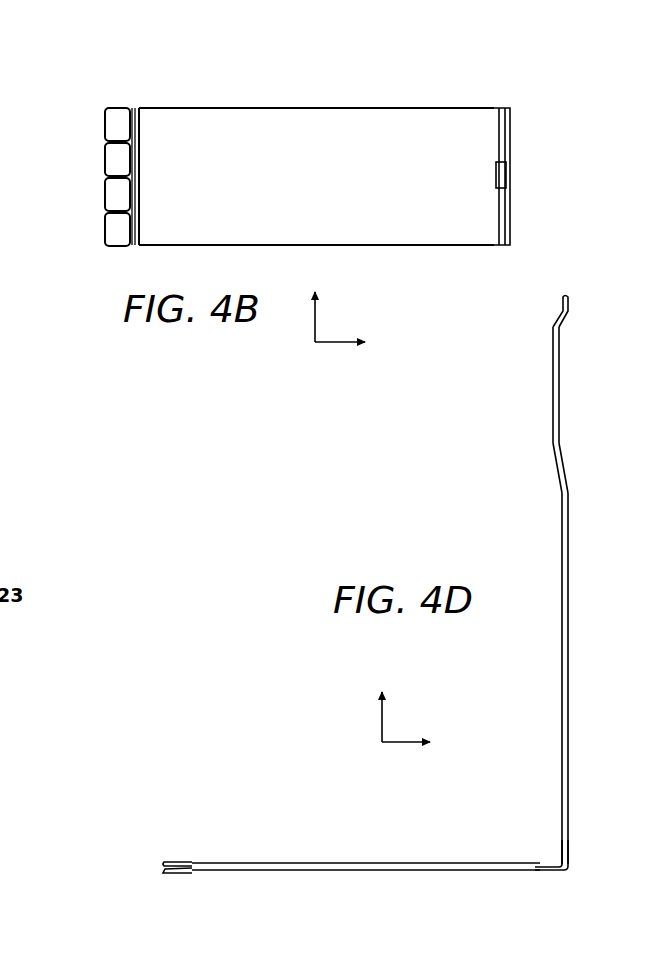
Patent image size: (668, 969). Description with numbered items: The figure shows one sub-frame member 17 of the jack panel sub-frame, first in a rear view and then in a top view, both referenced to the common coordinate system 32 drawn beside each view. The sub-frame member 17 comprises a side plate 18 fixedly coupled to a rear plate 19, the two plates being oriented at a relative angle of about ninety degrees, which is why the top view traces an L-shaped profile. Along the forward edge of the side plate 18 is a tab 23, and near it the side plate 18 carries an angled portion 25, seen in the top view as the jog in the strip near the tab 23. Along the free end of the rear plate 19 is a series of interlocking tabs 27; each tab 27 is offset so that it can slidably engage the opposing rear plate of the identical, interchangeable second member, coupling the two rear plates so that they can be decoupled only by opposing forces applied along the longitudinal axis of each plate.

In FIG. 4B, the sub-frame member 17 is at (257, 87).
In FIG. 4D, the sub-frame member 17 is at (550, 789).
In FIG. 4B, the side plate 18 is at (516, 100).
In FIG. 4D, the side plate 18 is at (571, 625).
In FIG. 4B, the rear plate 19 is at (383, 105).
In FIG. 4D, the rear plate 19 is at (363, 858).
In FIG. 4B, the tab 23 is at (511, 172).
In FIG. 4D, the tab 23 is at (569, 302).
In FIG. 4D, the angled portion 25 is at (560, 406).
In FIG. 4B, the interlocking tab 27 is at (120, 116).
In FIG. 4D, the interlocking tab 27 is at (180, 861).
In FIG. 4B, the coordinate system 32 is at (318, 338).
In FIG. 4D, the coordinate system 32 is at (385, 738).